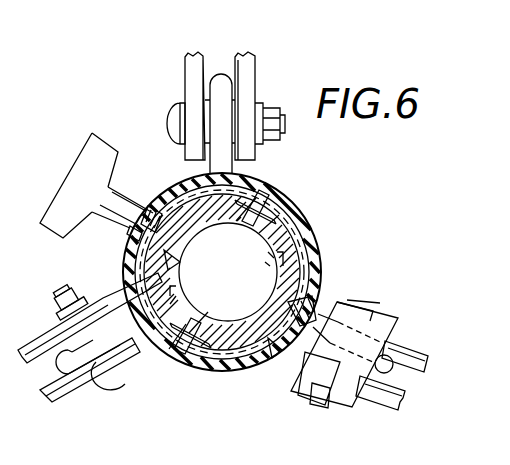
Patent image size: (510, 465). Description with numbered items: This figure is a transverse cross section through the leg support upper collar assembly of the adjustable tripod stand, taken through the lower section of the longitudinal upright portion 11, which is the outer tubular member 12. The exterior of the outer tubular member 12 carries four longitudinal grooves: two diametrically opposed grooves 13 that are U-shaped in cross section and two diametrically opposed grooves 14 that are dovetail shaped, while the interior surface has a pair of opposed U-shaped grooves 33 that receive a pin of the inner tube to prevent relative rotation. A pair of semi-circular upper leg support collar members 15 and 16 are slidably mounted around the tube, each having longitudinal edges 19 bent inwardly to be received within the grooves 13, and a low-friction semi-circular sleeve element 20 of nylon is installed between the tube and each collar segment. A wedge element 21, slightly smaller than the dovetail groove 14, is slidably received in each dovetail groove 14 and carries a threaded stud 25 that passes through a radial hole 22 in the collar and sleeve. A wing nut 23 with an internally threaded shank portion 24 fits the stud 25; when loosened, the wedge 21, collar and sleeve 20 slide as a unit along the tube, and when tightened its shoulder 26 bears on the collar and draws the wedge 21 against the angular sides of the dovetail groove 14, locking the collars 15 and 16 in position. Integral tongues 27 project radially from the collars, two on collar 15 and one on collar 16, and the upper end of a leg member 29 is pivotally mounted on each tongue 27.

The longitudinal upright portion 11 is at (313, 196).
The outer tubular member 12 is at (195, 188).
The U-shaped grooves 13 is at (226, 262).
The dovetail grooves 14 is at (185, 239).
The upper leg support collar member 15 is at (124, 262).
The upper leg support collar member 16 is at (318, 235).
The longitudinal edges 19 is at (268, 183).
The sleeve element 20 is at (125, 278).
The wedge element 21 is at (178, 255).
The hole 22 is at (153, 210).
The wing nut 23 is at (73, 173).
The shank portion 24 is at (112, 186).
The threaded stud 25 is at (132, 222).
The shoulder 26 is at (130, 208).
The tongue 27 is at (218, 80).
The leg member 29 is at (248, 53).
The U-shaped grooves 33 is at (273, 258).